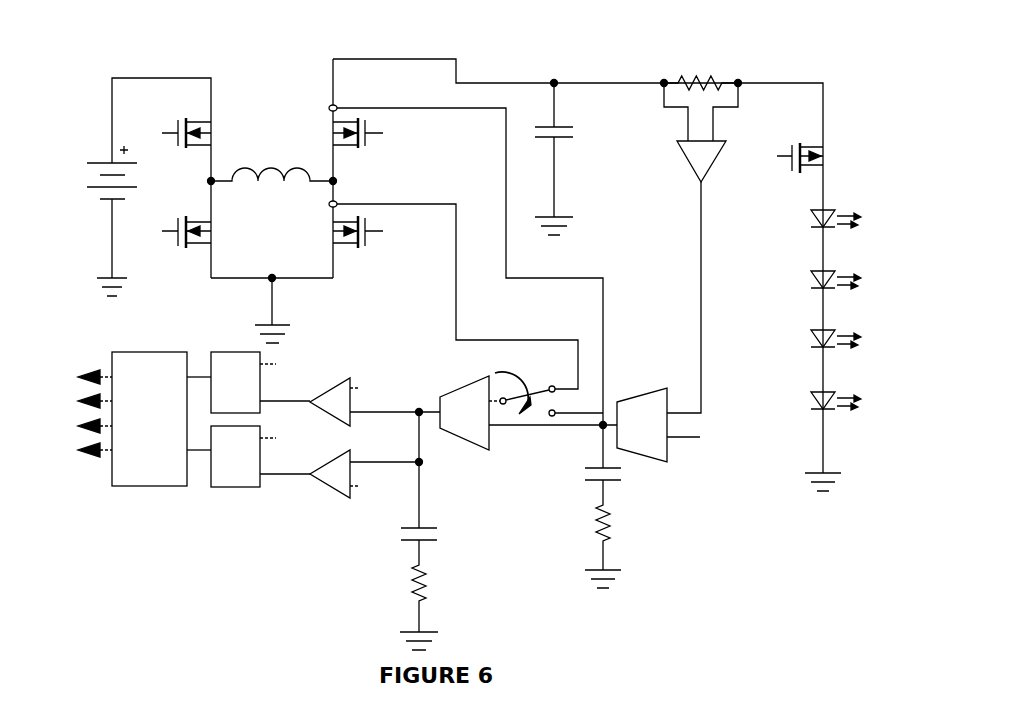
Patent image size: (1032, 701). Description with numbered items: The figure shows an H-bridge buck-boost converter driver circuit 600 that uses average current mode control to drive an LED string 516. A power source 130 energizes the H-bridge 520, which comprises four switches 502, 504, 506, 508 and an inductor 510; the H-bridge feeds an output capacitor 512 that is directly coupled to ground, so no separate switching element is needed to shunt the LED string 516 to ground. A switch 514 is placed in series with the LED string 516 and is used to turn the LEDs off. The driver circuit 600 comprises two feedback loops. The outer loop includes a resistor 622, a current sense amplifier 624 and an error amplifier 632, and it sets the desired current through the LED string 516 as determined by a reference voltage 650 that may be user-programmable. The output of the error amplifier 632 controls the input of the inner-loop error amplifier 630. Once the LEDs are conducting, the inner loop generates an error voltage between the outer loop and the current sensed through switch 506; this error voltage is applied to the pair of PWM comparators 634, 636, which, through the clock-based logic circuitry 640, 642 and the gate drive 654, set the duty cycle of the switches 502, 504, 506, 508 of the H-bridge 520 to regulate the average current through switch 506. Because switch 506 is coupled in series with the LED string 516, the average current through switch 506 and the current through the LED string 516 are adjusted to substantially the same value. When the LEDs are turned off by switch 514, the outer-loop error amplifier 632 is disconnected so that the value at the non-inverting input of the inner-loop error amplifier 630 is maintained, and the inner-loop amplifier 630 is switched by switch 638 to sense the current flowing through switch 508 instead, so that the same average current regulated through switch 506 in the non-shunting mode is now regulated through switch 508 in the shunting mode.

The power source 130 is at (80, 188).
The switch 502 is at (170, 146).
The switch 504 is at (170, 246).
The switch 506 is at (372, 148).
The switch 508 is at (372, 248).
The inductor 510 is at (298, 168).
The output capacitor 512 is at (544, 142).
The switch 514 is at (785, 176).
The LED string 516 is at (879, 254).
The H-bridge 520 is at (233, 92).
The driver circuit 600 is at (451, 48).
The resistor 622 is at (680, 81).
The current sense amplifier 624 is at (683, 161).
The error amplifier 630 is at (470, 383).
The error amplifier 632 is at (668, 456).
The comparator 634 is at (342, 375).
The comparator 636 is at (340, 492).
The switch 638 is at (545, 386).
The clock-based logic circuitry 640 is at (207, 352).
The clock-based logic circuitry 642 is at (207, 488).
The reference voltage 650 is at (738, 440).
The gate drive 654 is at (110, 355).